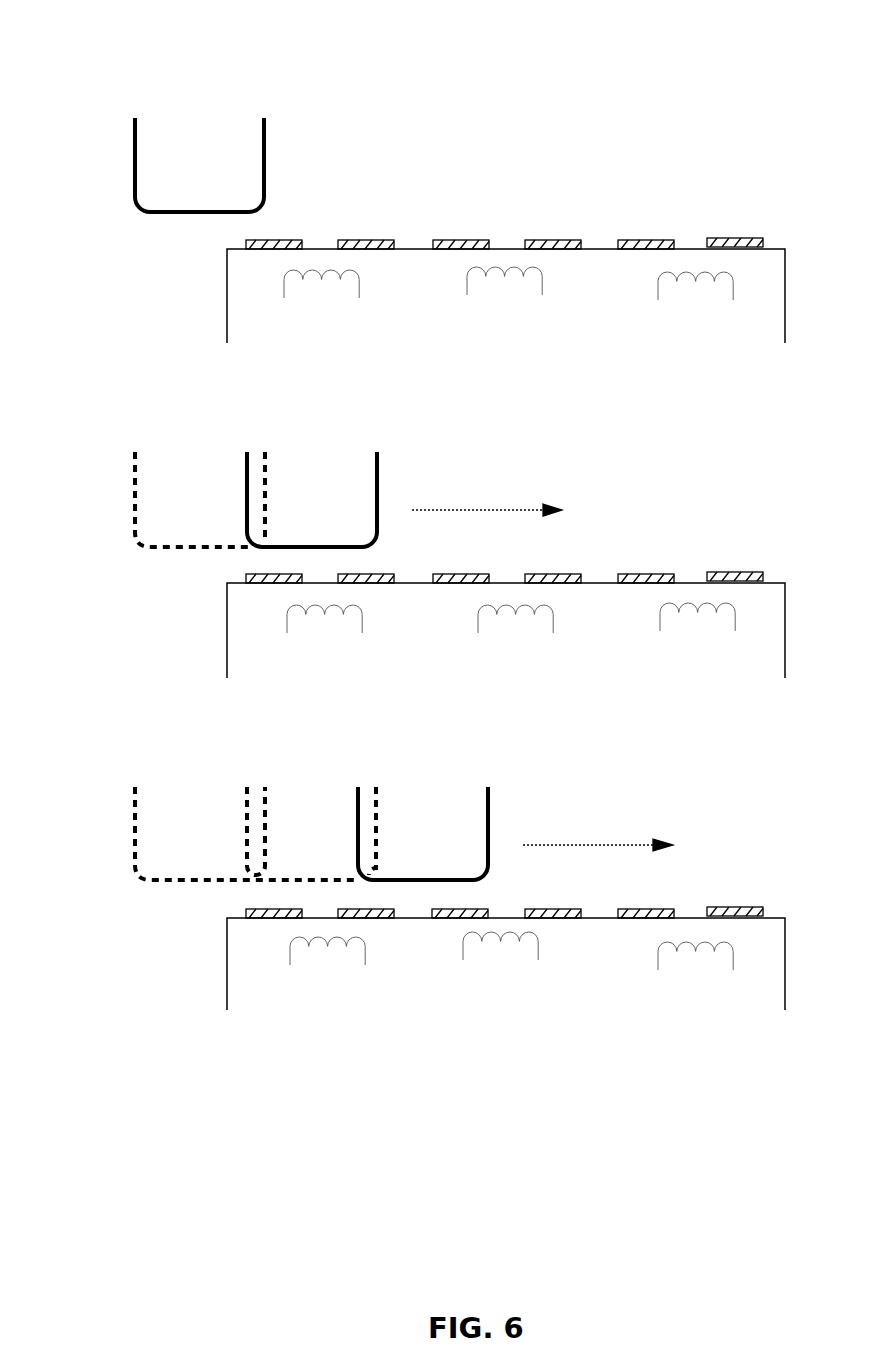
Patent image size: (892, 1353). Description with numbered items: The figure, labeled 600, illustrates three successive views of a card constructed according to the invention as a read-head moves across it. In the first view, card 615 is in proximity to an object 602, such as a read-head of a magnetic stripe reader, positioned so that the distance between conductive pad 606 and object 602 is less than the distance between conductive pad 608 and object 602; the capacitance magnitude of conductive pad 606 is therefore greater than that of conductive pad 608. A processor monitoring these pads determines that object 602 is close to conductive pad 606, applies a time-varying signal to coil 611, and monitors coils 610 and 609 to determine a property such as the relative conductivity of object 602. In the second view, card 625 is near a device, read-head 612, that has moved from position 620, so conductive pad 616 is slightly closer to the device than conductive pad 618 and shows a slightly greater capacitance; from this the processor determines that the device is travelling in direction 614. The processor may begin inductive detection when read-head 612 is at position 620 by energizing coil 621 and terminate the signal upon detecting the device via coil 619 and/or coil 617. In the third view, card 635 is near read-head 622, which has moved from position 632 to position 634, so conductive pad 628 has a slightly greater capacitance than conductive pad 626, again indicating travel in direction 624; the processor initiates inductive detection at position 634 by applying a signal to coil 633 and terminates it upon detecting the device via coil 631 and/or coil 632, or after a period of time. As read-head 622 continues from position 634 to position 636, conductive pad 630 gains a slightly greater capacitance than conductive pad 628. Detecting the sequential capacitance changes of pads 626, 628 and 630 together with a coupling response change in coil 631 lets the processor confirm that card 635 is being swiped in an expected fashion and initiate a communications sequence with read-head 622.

The process flow 600 is at (470, 20).
The object 602 is at (135, 140).
The conductive pad 606 is at (250, 243).
The conductive pad 608 is at (341, 243).
The coil 609 is at (695, 294).
The coil 610 is at (321, 290).
The coil 611 is at (504, 287).
The read-head 612 is at (247, 475).
The direction 614 is at (432, 510).
The card 615 is at (487, 358).
The conductive pad 616 is at (250, 578).
The coil 617 is at (697, 620).
The conductive pad 618 is at (341, 578).
The coil 619 is at (324, 623).
The position 620 is at (149, 521).
The coil 621 is at (515, 623).
The read-head 622 is at (358, 810).
The direction 624 is at (543, 845).
The card 625 is at (487, 706).
The conductive pad 626 is at (250, 913).
The conductive pad 628 is at (341, 913).
The conductive pad 630 is at (436, 913).
The coil 631 is at (327, 956).
The position / coil 632 is at (150, 856).
The coil 633 is at (500, 951).
The position 634 is at (298, 808).
The card 635 is at (487, 1012).
The position 636 is at (435, 808).